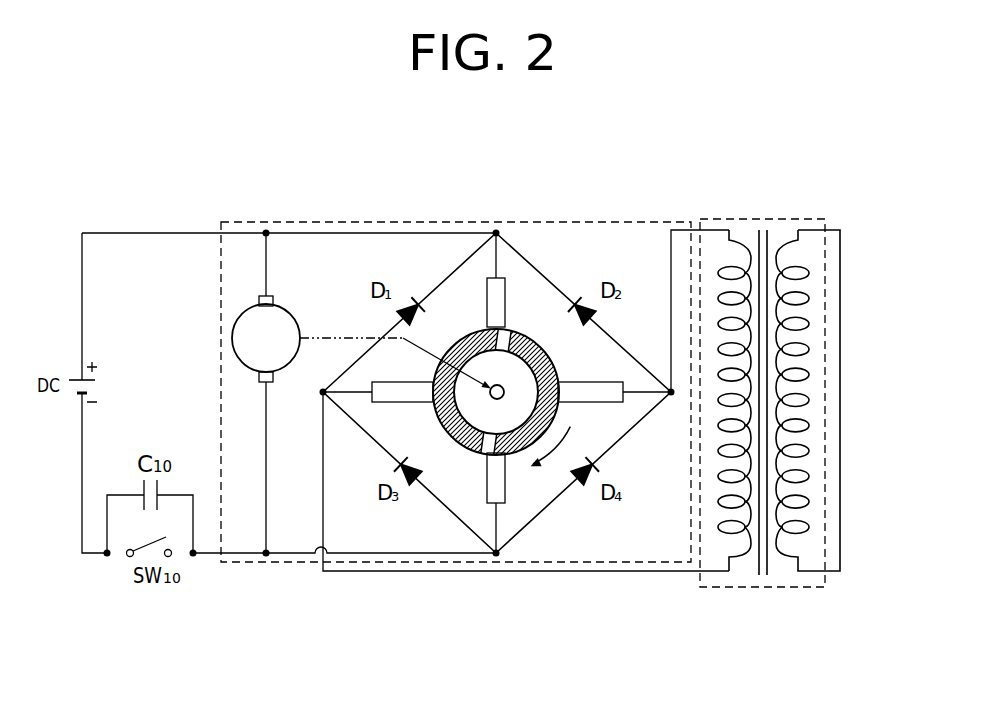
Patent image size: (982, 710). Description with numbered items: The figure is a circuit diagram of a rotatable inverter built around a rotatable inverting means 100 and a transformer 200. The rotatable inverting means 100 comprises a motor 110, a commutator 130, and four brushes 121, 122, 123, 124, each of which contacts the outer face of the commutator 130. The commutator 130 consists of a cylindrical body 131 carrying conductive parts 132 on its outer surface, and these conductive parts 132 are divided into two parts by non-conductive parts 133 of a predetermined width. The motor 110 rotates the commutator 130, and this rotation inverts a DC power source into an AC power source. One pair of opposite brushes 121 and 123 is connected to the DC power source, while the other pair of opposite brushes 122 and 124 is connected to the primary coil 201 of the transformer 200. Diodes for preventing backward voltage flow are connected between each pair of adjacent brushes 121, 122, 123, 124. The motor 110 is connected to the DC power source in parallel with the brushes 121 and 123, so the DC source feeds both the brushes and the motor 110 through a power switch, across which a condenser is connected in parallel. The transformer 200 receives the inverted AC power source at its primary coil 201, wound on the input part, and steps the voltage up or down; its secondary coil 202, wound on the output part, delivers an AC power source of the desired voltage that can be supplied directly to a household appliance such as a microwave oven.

The rotatable inverting means 100 is at (643, 221).
The motor 110 is at (245, 366).
The brush 121 is at (505, 292).
The brush 122 is at (373, 403).
The brush 123 is at (487, 487).
The brush 124 is at (583, 383).
The commutator 130 is at (465, 321).
The cylindrical body 131 is at (525, 407).
The conductive parts 132 is at (513, 458).
The non-conductive parts 133 is at (510, 335).
The transformer 200 is at (740, 221).
The primary coil 201 is at (720, 496).
The secondary coil 202 is at (803, 478).